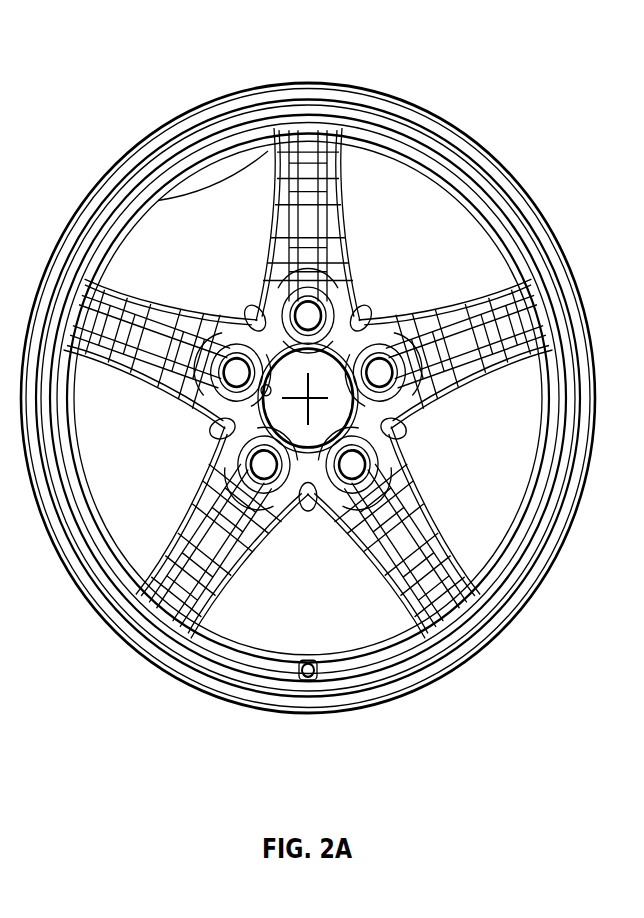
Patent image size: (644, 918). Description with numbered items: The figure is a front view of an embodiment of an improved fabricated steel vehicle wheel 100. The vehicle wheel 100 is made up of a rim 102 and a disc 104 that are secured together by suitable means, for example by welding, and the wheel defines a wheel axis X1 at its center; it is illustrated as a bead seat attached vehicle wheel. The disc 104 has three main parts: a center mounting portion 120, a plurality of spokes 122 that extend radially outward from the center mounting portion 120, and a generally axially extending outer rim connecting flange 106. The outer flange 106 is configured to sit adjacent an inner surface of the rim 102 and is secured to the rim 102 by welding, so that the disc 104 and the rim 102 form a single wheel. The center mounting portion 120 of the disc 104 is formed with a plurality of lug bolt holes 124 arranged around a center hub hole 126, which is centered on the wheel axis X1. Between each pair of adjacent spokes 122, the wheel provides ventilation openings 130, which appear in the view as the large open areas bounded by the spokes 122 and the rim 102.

The fabricated steel vehicle wheel 100 is at (330, 376).
The rim 102 is at (516, 178).
The disc 104 is at (425, 490).
The outer rim connecting flange 106 is at (231, 168).
The center mounting portion 120 is at (368, 300).
The spokes 122 is at (492, 310).
The lug bolt holes 124 is at (262, 462).
The center hub hole 126 is at (232, 424).
The ventilation openings 130 is at (528, 428).
The wheel axis X1 is at (330, 398).